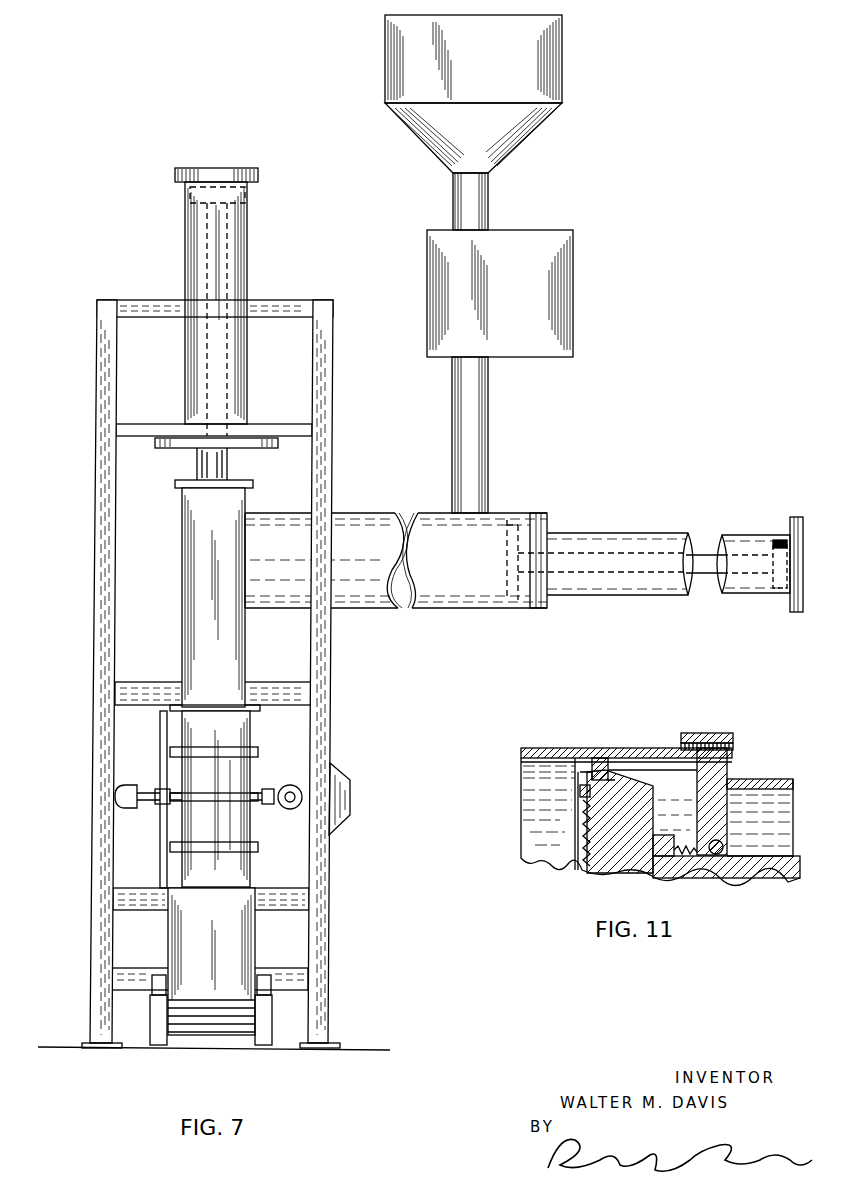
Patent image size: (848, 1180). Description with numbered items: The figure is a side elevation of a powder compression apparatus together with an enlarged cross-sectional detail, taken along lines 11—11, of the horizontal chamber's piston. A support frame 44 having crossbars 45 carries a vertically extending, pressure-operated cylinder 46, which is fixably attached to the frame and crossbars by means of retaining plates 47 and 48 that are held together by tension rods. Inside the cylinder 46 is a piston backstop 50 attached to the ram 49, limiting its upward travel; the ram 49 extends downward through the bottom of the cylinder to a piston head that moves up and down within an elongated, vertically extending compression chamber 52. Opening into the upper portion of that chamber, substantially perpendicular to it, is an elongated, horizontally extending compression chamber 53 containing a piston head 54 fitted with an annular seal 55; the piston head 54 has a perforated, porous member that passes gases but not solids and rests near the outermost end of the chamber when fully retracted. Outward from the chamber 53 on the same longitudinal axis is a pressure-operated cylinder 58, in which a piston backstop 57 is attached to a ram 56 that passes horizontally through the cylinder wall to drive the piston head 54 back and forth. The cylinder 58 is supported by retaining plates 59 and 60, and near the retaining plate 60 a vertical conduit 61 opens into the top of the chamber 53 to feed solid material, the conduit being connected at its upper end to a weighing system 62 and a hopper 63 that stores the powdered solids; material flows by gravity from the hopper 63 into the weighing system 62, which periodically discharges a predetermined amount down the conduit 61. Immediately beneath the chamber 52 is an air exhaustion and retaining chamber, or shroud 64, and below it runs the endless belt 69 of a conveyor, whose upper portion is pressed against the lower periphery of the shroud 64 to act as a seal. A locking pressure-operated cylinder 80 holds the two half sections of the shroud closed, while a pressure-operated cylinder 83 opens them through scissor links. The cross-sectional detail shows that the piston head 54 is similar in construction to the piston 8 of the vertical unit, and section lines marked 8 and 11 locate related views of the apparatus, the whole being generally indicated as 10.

In FIG. 7, the piston 8 is at (383, 772).
In FIG. 7, the molding apparatus 10 is at (188, 462).
In FIG. 7, the section line for FIG. 11 is at (573, 568).
In FIG. 7, the support frame 44 is at (333, 406).
In FIG. 7, the crossbars 45 is at (295, 303).
In FIG. 7, the pressure-operated cylinder 46 is at (248, 288).
In FIG. 7, the retaining plate 47 is at (182, 170).
In FIG. 7, the retaining plate 48 is at (268, 452).
In FIG. 7, the ram 49 is at (225, 262).
In FIG. 7, the piston backstop 50 is at (240, 213).
In FIG. 7, the compression chamber 52 is at (182, 620).
In FIG. 7, the compression chamber 53 is at (362, 515).
In FIG. 11, the compression chamber 53 is at (550, 748).
In FIG. 7, the piston head 54 is at (518, 592).
In FIG. 11, the piston head 54 is at (606, 872).
In FIG. 11, the annular seal 55 is at (600, 760).
In FIG. 7, the ram 56 is at (710, 555).
In FIG. 11, the ram 56 is at (740, 884).
In FIG. 7, the piston backstop 57 is at (773, 543).
In FIG. 7, the pressure-operated cylinder 58 is at (632, 533).
In FIG. 7, the retaining plate 59 is at (800, 517).
In FIG. 7, the retaining plate 60 is at (535, 520).
In FIG. 11, the retaining plate 60 is at (722, 736).
In FIG. 7, the conduit 61 is at (488, 425).
In FIG. 7, the weighing system 62 is at (575, 280).
In FIG. 7, the hopper 63 is at (562, 92).
In FIG. 7, the shroud 64 is at (245, 736).
In FIG. 7, the endless belt 69 is at (250, 952).
In FIG. 7, the locking pressure-operated cylinder 80 is at (135, 806).
In FIG. 7, the pressure-operated cylinder 83 is at (300, 812).